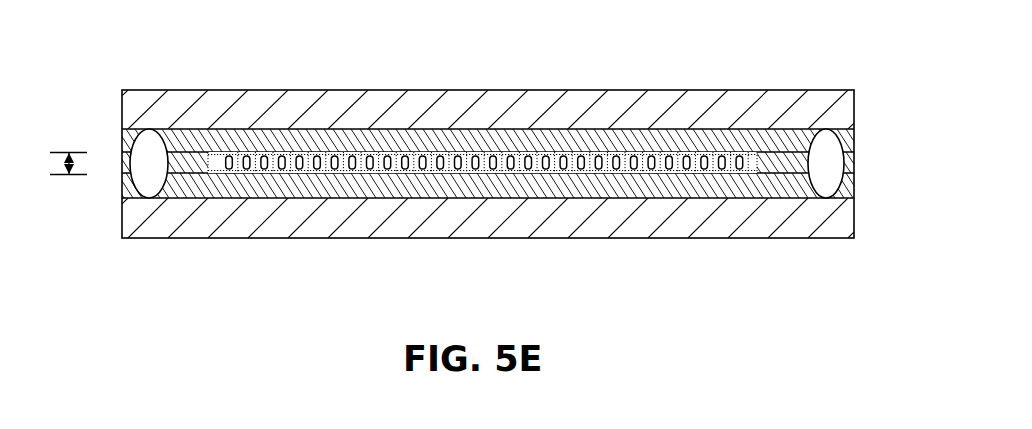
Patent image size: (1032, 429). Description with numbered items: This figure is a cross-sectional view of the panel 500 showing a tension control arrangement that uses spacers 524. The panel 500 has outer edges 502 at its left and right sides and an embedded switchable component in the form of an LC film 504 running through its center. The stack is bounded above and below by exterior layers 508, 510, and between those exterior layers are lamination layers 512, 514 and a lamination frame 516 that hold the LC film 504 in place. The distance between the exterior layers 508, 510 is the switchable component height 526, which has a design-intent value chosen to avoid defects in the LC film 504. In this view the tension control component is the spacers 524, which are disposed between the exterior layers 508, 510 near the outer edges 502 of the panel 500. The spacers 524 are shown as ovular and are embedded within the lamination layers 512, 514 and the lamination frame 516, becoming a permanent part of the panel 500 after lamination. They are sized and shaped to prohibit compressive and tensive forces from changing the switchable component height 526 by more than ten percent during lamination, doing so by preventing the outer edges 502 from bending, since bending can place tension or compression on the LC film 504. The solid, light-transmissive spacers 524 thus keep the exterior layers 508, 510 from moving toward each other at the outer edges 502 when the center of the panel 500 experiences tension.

The panel 500 is at (90, 45).
The outer edges 502 is at (108, 119).
The LC film 504 is at (322, 151).
The exterior layer 508 is at (855, 93).
The exterior layer 510 is at (855, 227).
The lamination layer 512 is at (855, 142).
The lamination layer 514 is at (855, 190).
The lamination frame 516 is at (855, 165).
The spacers 524 is at (166, 182).
The switchable component height 526 is at (69, 175).